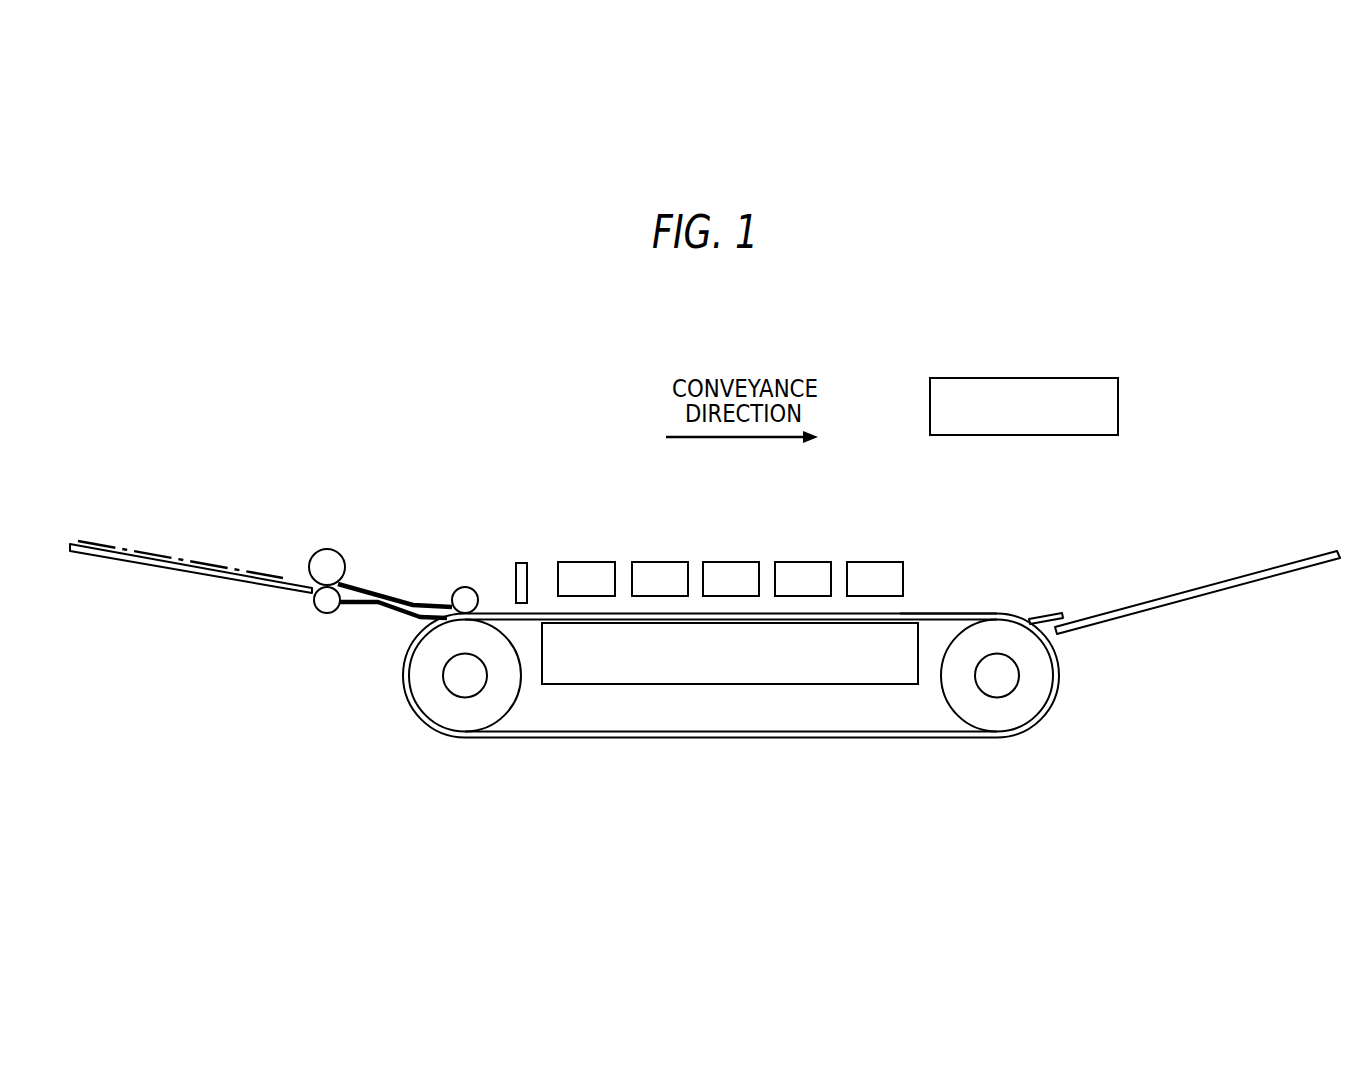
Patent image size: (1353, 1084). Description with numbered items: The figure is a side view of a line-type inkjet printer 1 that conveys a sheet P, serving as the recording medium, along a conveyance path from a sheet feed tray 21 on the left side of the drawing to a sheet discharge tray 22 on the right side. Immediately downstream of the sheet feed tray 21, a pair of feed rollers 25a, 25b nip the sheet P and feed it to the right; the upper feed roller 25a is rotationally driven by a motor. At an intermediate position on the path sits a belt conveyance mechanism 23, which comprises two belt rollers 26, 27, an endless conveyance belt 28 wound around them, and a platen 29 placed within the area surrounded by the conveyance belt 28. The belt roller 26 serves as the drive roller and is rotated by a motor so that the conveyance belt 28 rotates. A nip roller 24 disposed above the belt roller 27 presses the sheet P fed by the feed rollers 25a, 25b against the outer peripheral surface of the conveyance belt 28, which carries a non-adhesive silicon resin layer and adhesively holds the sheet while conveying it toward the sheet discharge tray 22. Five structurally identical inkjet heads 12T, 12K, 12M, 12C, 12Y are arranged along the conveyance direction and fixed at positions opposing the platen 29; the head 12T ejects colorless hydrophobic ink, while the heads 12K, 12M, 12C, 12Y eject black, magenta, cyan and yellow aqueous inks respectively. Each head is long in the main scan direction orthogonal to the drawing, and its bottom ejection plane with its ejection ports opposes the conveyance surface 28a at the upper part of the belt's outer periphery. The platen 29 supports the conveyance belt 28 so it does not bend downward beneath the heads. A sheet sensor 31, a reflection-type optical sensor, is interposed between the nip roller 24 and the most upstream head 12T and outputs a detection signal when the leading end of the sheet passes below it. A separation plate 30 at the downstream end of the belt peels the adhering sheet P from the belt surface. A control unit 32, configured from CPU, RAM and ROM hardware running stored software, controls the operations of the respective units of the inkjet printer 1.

The inkjet printer 1 is at (1129, 480).
The sheet P is at (103, 543).
The inkjet head 12T is at (587, 562).
The inkjet head 12K is at (660, 562).
The inkjet head 12M is at (732, 562).
The inkjet head 12C is at (803, 562).
The inkjet head 12Y is at (877, 562).
The sheet feed tray 21 is at (153, 567).
The sheet discharge tray 22 is at (1267, 582).
The belt conveyance mechanism 23 is at (378, 731).
The nip roller 24 is at (465, 597).
The feed roller 25a is at (327, 568).
The feed roller 25b is at (327, 601).
The belt roller 26 is at (1027, 707).
The belt roller 27 is at (478, 712).
The conveyance belt 28 is at (658, 738).
The conveyance surface 28a is at (950, 616).
The platen 29 is at (617, 660).
The separation plate 30 is at (1048, 615).
The sheet sensor 31 is at (522, 562).
The control unit 32 is at (1045, 377).